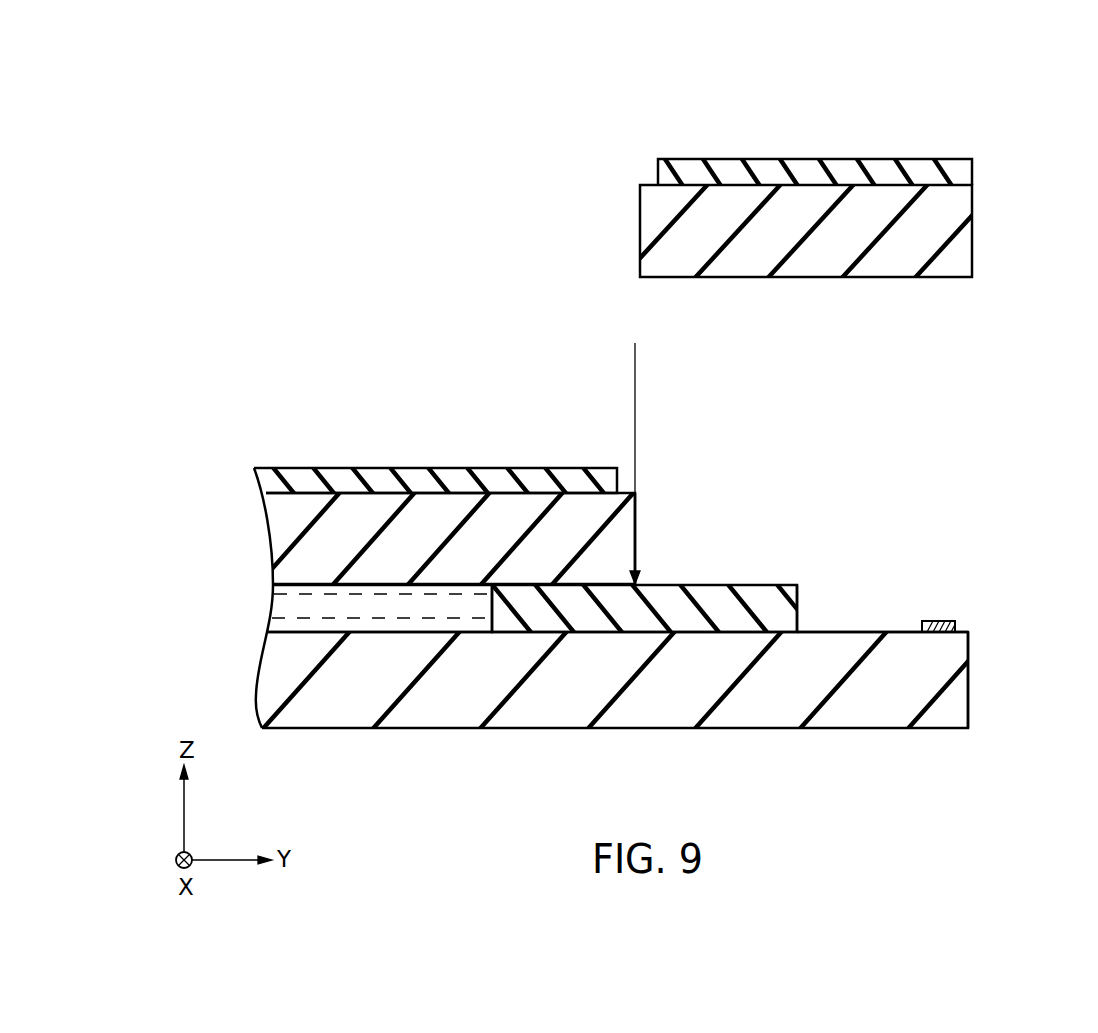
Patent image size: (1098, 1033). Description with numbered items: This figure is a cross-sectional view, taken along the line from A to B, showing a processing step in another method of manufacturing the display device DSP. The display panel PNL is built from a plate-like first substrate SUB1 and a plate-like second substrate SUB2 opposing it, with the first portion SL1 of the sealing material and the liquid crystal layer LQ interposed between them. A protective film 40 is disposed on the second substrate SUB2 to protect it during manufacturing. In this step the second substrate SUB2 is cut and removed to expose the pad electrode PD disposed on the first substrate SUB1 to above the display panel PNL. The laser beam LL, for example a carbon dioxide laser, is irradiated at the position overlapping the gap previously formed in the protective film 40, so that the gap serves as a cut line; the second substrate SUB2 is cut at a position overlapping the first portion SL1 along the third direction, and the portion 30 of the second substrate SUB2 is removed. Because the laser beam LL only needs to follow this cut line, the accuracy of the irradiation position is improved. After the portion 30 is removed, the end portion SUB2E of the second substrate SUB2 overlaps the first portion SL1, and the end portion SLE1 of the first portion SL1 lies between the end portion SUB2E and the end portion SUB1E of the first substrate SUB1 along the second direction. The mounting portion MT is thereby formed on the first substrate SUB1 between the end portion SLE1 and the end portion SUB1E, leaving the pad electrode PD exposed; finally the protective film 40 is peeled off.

The display device DSP is at (858, 127).
The portion of the second substrate 30 is at (962, 238).
The laser beam LL is at (636, 447).
The display panel PNL is at (882, 468).
The protective film 40 is at (338, 472).
The line A-B end point A is at (245, 479).
The line A-B end point B is at (966, 477).
The second substrate SUB2 is at (295, 533).
The end portion of the second substrate SUB2E is at (637, 520).
The mounting portion MT is at (920, 608).
The liquid crystal layer LQ is at (296, 606).
The end portion of the first portion of the sealing material SLE1 is at (800, 588).
The first portion of the sealing material SL1 is at (778, 617).
The pad electrode PD is at (958, 624).
The first substrate SUB1 is at (296, 683).
The end portion of the first substrate SUB1E is at (970, 680).